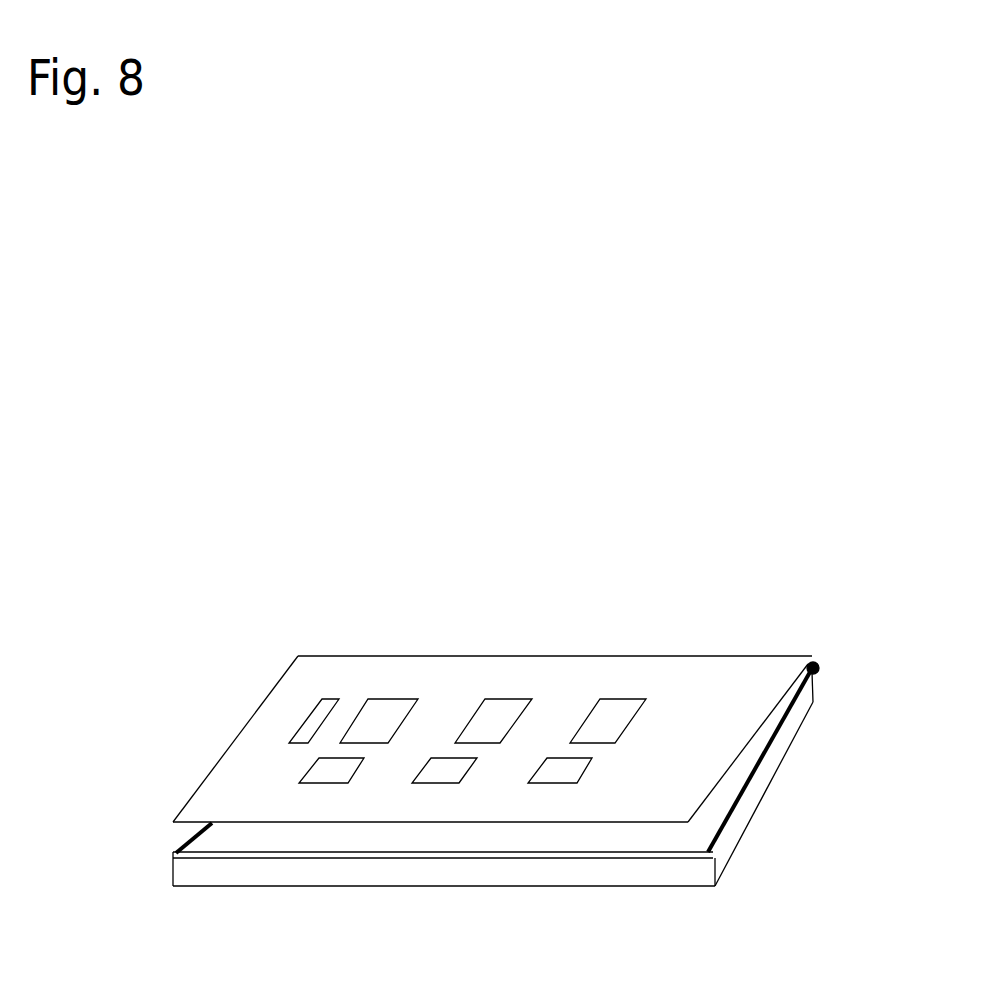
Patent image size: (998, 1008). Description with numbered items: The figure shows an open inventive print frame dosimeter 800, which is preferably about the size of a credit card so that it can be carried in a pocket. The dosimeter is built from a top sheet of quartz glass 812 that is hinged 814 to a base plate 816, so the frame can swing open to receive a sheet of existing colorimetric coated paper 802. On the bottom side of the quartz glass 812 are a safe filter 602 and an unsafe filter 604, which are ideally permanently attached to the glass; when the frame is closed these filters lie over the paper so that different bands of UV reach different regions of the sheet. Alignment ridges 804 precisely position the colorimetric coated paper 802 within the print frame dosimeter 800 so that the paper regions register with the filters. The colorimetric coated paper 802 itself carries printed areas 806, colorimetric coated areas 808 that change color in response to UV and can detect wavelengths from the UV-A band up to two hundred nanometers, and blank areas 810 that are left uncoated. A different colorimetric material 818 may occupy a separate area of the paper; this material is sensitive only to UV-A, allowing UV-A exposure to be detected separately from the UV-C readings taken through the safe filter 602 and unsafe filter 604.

The print frame dosimeter 800 is at (775, 222).
The colorimetric coated paper 802 is at (720, 808).
The alignment ridges 804 is at (175, 853).
The printed areas 806 is at (306, 717).
The colorimetric coated areas 808 is at (338, 793).
The blank areas 810 is at (653, 778).
The top sheet of quartz glass 812 is at (313, 676).
The hinge 814 is at (815, 667).
The base plate 816 is at (777, 765).
The different colorimetric material 818 is at (620, 709).
The safe filter 602 is at (390, 699).
The unsafe filter 604 is at (506, 699).